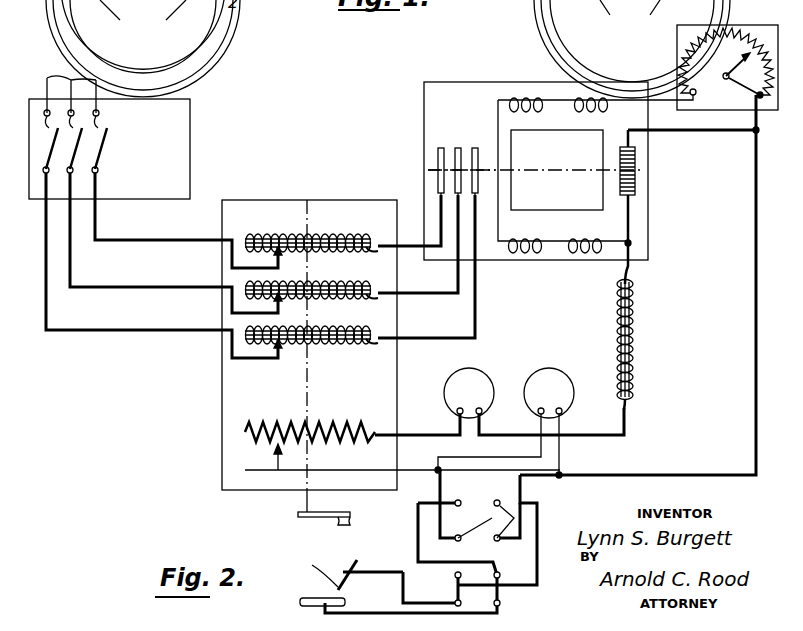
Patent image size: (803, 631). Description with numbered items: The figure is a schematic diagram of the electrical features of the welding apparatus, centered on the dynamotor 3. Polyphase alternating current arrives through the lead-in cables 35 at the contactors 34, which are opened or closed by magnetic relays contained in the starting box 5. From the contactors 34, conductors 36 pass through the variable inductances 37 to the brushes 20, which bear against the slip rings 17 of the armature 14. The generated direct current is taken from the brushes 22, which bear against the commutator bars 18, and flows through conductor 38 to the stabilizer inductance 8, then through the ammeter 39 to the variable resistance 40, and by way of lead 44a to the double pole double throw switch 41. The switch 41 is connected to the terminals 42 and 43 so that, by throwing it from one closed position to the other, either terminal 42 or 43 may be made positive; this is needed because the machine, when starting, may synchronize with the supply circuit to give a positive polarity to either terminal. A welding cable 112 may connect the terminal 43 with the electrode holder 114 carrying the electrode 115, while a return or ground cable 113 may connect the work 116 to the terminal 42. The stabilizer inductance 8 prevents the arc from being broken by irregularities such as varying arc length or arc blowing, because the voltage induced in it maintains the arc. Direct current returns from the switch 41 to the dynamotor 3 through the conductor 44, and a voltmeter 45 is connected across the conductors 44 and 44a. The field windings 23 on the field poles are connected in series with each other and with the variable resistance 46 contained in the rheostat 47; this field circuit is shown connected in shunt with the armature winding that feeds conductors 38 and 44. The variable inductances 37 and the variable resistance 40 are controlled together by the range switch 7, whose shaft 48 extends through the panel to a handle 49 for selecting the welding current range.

The dynamotor 3 is at (424, 94).
The starting box 5 is at (190, 124).
The range switch 7 is at (222, 382).
The stabilizer inductance 8 is at (634, 322).
The armature 14 is at (576, 156).
The slip rings 17 is at (475, 148).
The commutator bars 18 is at (636, 170).
The brushes 20 is at (441, 195).
The brushes 22 is at (636, 134).
The field windings 23 is at (522, 98).
The contactors 34 is at (58, 150).
The lead-in cables 35 is at (58, 68).
The conductors 36 is at (110, 239).
The variable inductances 37 is at (312, 236).
The conductor 38 is at (630, 268).
The ammeter 39 is at (478, 374).
The variable resistance 40 is at (330, 420).
The double pole double throw switch 41 is at (477, 527).
The terminal 42 is at (500, 606).
The terminal 43 is at (506, 594).
The conductor 44 is at (755, 394).
The lead 44a is at (420, 474).
The voltmeter 45 is at (558, 374).
The variable resistance 46 is at (750, 42).
The rheostat 47 is at (696, 28).
The shaft 48 is at (300, 499).
The handle 49 is at (308, 522).
The welding cable 112 is at (455, 602).
The return or ground cable 113 is at (400, 611).
The electrode holder 114 is at (356, 574).
The electrode 115 is at (308, 569).
The work 116 is at (300, 601).